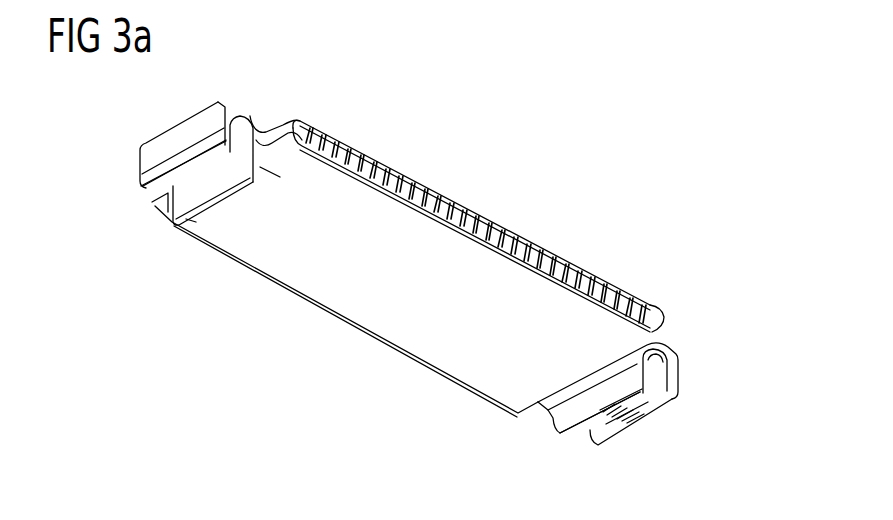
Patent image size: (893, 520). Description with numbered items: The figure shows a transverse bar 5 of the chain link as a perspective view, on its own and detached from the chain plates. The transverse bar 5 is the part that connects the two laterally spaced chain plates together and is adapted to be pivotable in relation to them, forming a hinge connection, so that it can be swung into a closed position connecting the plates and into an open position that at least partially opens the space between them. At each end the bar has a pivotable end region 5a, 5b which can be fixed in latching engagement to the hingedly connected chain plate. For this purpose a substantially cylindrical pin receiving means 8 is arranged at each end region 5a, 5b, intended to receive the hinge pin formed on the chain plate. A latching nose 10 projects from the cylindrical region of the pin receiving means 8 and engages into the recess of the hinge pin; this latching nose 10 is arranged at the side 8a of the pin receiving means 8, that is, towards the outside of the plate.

The transverse bar 5 is at (367, 303).
The pivotable end region 5a is at (710, 380).
The pivotable end region 5b is at (126, 163).
The pin receiving means 8 is at (246, 118).
The side of the pin receiving means 8a is at (168, 140).
The latching nose 10 is at (623, 425).